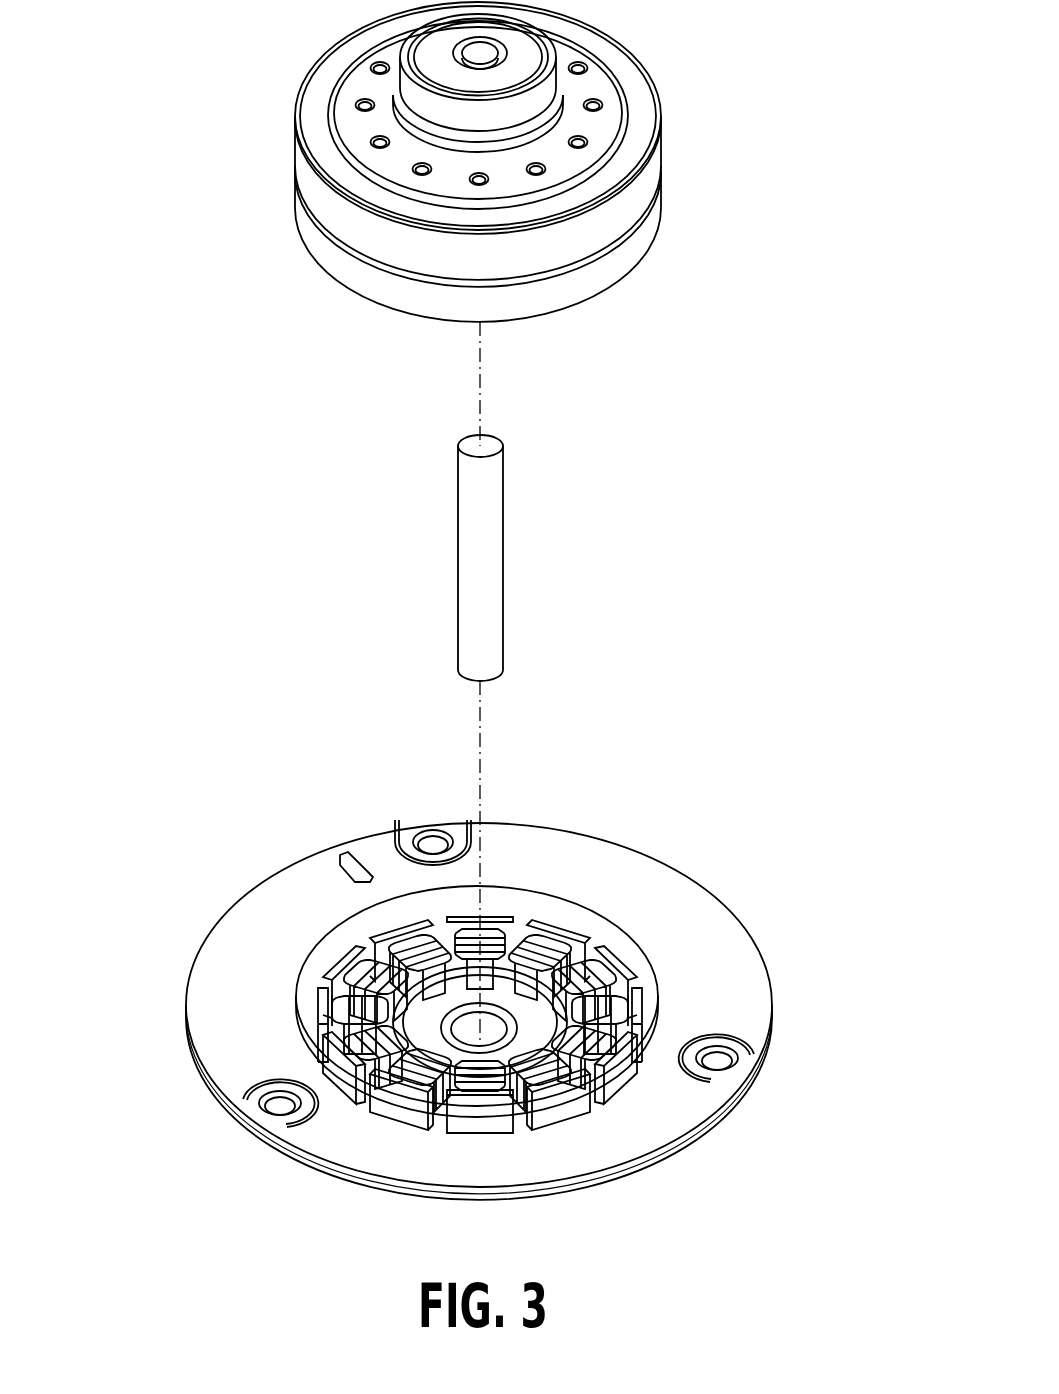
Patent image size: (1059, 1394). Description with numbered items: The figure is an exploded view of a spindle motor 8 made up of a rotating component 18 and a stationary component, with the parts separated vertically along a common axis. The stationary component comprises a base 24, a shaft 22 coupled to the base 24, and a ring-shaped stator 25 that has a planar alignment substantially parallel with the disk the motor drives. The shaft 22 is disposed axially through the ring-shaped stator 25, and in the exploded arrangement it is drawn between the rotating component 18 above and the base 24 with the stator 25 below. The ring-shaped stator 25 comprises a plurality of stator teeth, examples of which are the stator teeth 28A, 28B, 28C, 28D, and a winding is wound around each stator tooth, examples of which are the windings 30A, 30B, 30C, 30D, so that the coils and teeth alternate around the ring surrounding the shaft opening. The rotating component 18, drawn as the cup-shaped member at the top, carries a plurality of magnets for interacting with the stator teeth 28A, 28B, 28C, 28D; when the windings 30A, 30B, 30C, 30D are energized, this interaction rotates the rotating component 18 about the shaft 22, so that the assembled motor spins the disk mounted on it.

The spindle motor 8 is at (186, 99).
The rotating component 18 is at (661, 162).
The shaft 22 is at (503, 613).
The base 24 is at (765, 1027).
The ring-shaped stator 25 is at (468, 953).
The stator tooth 28A is at (393, 942).
The stator tooth 28B is at (335, 962).
The stator tooth 28C is at (335, 1040).
The stator tooth 28D is at (632, 1017).
The winding 30A is at (390, 962).
The winding 30B is at (348, 990).
The winding 30C is at (358, 1072).
The winding 30D is at (615, 1015).